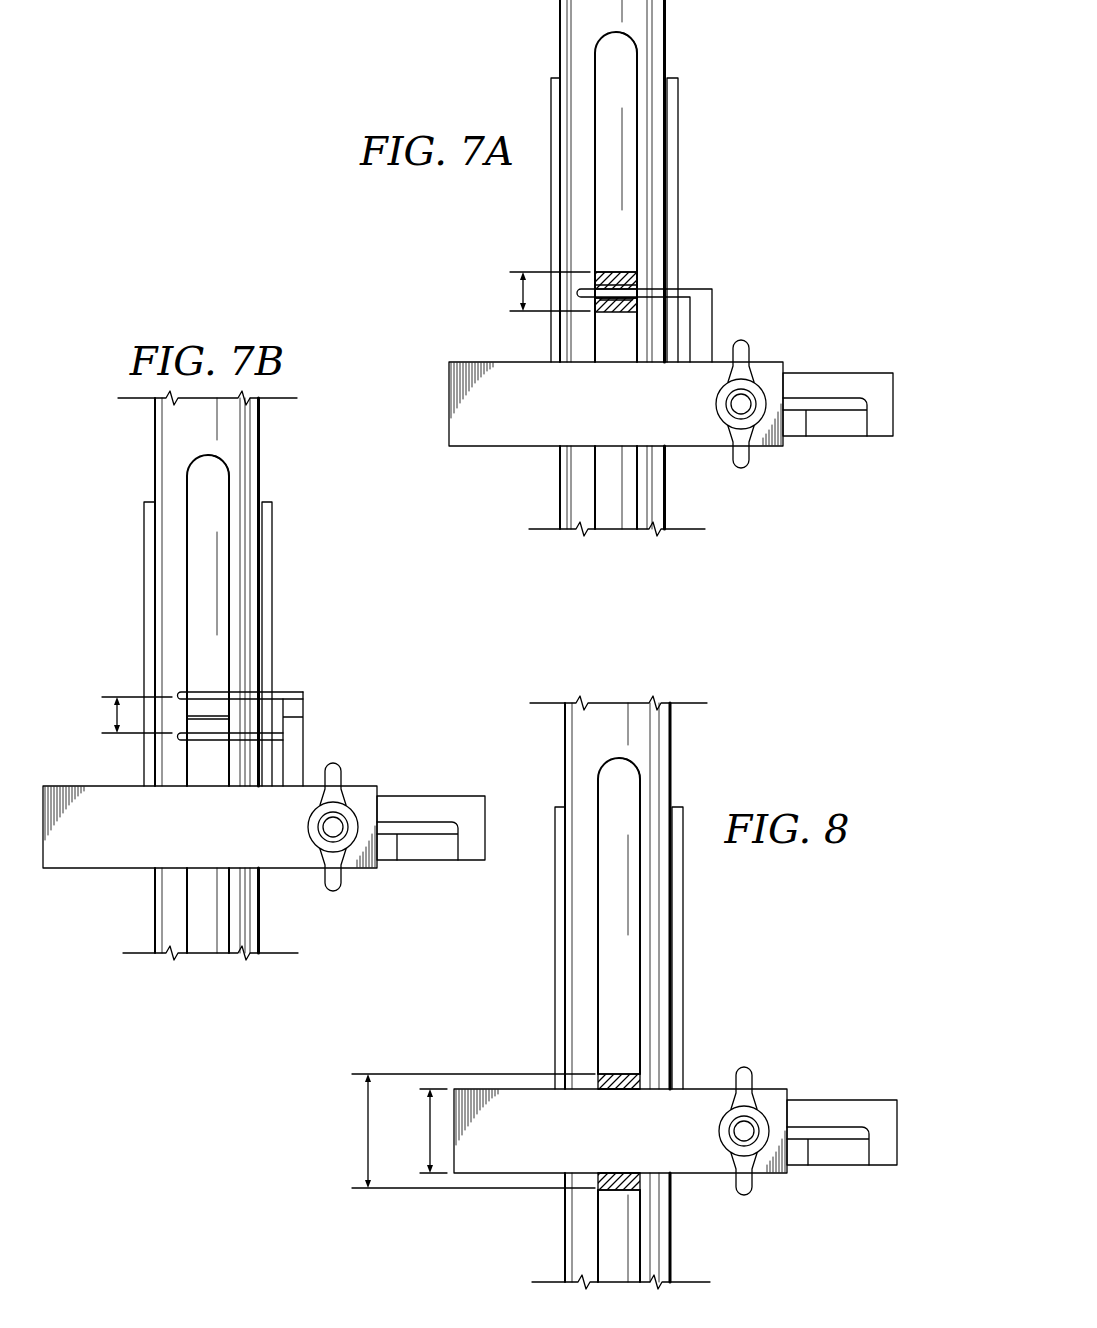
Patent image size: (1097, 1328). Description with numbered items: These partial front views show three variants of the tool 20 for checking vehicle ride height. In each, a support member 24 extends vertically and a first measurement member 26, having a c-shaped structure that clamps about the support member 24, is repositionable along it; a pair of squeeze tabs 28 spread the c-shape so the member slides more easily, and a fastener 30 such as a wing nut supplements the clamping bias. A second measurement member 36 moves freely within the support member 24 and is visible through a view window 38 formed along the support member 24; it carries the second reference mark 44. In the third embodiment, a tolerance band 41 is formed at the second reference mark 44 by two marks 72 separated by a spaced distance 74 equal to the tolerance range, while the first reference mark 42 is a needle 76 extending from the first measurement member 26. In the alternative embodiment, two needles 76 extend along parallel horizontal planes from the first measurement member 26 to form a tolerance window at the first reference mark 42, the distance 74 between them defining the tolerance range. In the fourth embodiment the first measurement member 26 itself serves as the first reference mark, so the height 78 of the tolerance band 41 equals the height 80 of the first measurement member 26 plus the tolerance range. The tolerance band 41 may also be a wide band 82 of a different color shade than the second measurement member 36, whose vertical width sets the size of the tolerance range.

In FIG. 7A, the tool 20 is at (784, 218).
In FIG. 7B, the tool 20 is at (374, 643).
In FIG. 8, the tool 20 is at (781, 960).
In FIG. 7A, the support member 24 is at (560, 30).
In FIG. 7B, the support member 24 is at (155, 455).
In FIG. 8, the support member 24 is at (672, 733).
In FIG. 7A, the first measurement member 26 is at (482, 447).
In FIG. 7B, the first measurement member 26 is at (74, 870).
In FIG. 8, the first measurement member 26 is at (770, 1089).
In FIG. 7A, the squeeze tabs 28 is at (838, 372).
In FIG. 7B, the squeeze tabs 28 is at (430, 795).
In FIG. 8, the squeeze tabs 28 is at (840, 1100).
In FIG. 7A, the fastener 30 is at (748, 468).
In FIG. 7B, the fastener 30 is at (340, 892).
In FIG. 8, the fastener 30 is at (752, 1196).
In FIG. 7A, the second measurement member 36 is at (607, 60).
In FIG. 7B, the second measurement member 36 is at (200, 484).
In FIG. 8, the second measurement member 36 is at (608, 1003).
In FIG. 7A, the view window 38 is at (637, 98).
In FIG. 7B, the view window 38 is at (229, 522).
In FIG. 8, the view window 38 is at (640, 826).
In FIG. 7A, the tolerance band 41 is at (626, 318).
In FIG. 8, the tolerance band 41 is at (626, 1198).
In FIG. 7A, the first reference mark 42 is at (598, 270).
In FIG. 7B, the first reference mark 42 is at (305, 716).
In FIG. 8, the first reference mark 42 is at (612, 1073).
In FIG. 7B, the second reference mark 44 is at (207, 720).
In FIG. 7A, the marks 72 is at (620, 272).
In FIG. 8, the marks 72 is at (640, 1075).
In FIG. 7A, the spaced distance 74 is at (519, 291).
In FIG. 7B, the spaced distance 74 is at (112, 713).
In FIG. 7A, the needle 76 is at (688, 290).
In FIG. 7B, the needle 76 is at (178, 690).
In FIG. 8, the height of the tolerance band 78 is at (365, 1132).
In FIG. 8, the height of the first measurement member 80 is at (428, 1137).
In FIG. 7A, the wide band 82 is at (632, 270).
In FIG. 8, the wide band 82 is at (632, 1081).